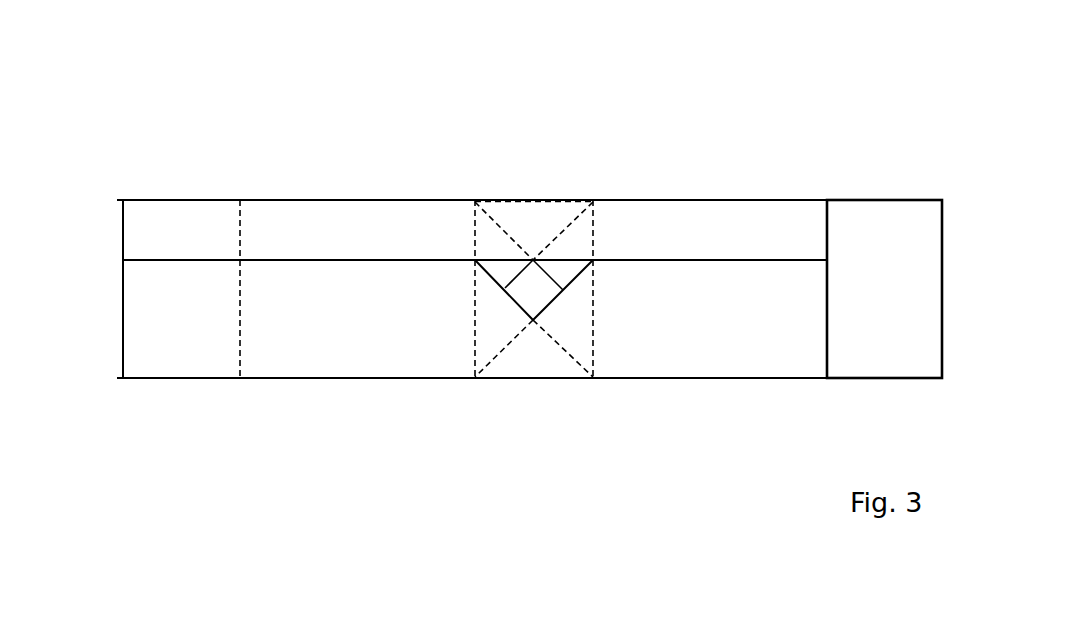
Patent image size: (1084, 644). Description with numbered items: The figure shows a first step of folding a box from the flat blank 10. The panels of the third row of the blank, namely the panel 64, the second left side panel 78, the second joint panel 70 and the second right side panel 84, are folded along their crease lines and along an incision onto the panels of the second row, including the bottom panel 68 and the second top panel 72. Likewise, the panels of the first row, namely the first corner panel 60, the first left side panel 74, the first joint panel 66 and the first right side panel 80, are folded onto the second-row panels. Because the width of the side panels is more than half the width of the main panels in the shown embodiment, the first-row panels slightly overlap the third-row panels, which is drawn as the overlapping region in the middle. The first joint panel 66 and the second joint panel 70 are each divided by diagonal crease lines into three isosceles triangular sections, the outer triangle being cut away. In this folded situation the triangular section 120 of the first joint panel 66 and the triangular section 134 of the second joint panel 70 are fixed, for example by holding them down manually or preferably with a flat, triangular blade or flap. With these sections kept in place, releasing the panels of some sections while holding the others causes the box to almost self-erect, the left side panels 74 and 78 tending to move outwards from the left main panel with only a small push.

The blank 10 is at (118, 96).
The first corner panel 60 is at (203, 350).
The panel of the first section in the third row 64 is at (170, 227).
The first joint panel 66 is at (560, 405).
The bottom panel 68 is at (527, 287).
The second joint panel 70 is at (538, 165).
The second top panel 72 is at (883, 230).
The first left side panel 74 is at (347, 352).
The second left side panel 78 is at (390, 237).
The first right side panel 80 is at (768, 365).
The second right side panel 84 is at (758, 230).
The triangular section of the first joint panel 120 is at (533, 363).
The triangular section of the second joint panel 134 is at (553, 217).